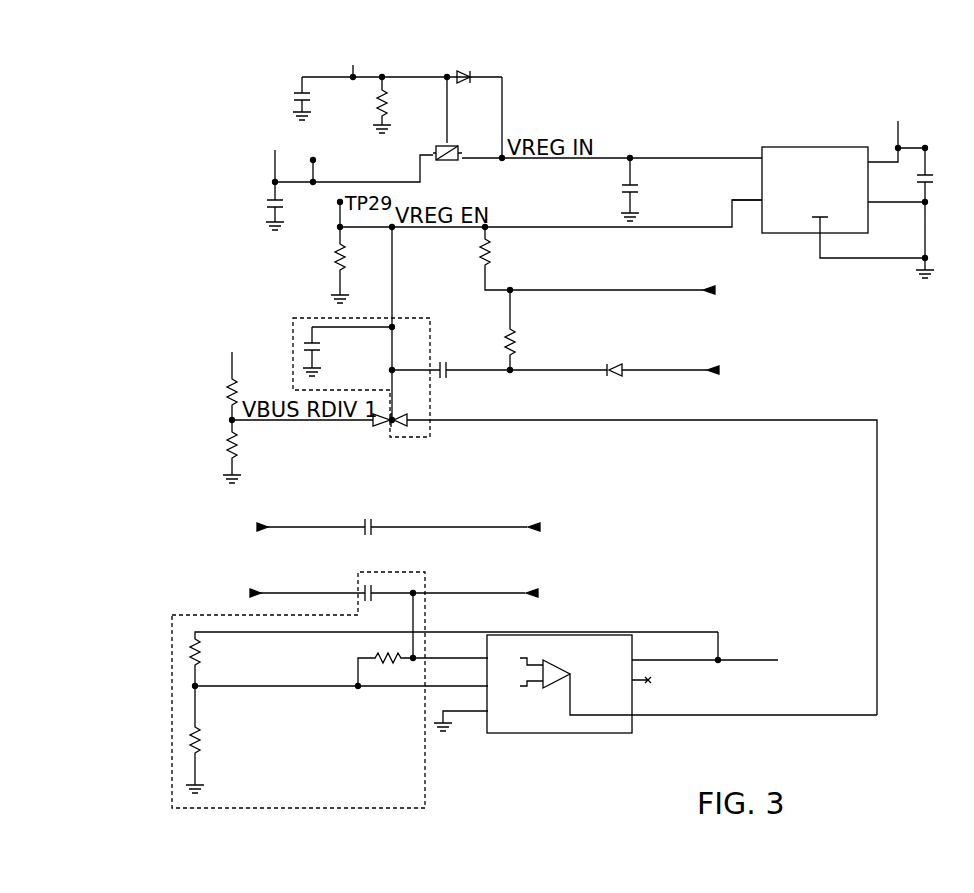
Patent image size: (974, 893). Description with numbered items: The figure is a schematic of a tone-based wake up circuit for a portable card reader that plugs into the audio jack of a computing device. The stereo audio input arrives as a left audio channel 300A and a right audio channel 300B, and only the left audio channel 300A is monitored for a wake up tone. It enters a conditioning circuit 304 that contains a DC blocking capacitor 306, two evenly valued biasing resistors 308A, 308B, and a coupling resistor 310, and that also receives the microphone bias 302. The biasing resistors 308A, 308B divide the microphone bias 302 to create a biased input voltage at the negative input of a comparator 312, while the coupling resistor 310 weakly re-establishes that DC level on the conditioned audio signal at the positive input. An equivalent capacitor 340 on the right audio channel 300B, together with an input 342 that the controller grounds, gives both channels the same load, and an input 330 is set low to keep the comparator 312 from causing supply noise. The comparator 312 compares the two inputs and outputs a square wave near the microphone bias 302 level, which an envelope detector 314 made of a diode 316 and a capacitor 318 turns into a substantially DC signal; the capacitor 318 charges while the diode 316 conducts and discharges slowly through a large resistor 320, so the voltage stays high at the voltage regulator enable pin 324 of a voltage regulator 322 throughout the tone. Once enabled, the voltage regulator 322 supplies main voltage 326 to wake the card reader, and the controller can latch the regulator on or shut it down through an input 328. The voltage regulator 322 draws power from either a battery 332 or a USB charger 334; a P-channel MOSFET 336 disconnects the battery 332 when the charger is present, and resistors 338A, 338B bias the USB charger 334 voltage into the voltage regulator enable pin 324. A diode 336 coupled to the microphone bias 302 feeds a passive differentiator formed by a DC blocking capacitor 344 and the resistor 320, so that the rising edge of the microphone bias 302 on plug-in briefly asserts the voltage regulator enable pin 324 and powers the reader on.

The left audio channel 300A is at (251, 592).
The right audio channel 300B is at (258, 528).
The microphone bias 302 is at (720, 370).
The conditioning circuit 304 is at (172, 632).
The DC blocking capacitor 306 is at (376, 590).
The biasing resistor 308A is at (190, 655).
The biasing resistor 308B is at (190, 750).
The coupling resistor 310 is at (388, 662).
The comparator 312 is at (572, 735).
The envelope detector 314 is at (295, 320).
The diode 316 is at (408, 430).
The capacitor 318 is at (328, 345).
The resistor 320 is at (338, 263).
The voltage regulator 322 is at (785, 145).
The voltage regulator enable pin 324 is at (752, 203).
The main voltage 326 is at (897, 100).
The input 328 is at (716, 290).
The input 330 is at (538, 593).
The battery 332 is at (250, 130).
The USB charger 334 is at (312, 50).
The P-channel MOSFET / diode 336 is at (447, 166).
The resistor 338A is at (227, 385).
The resistor 338B is at (227, 452).
The equivalent capacitor 340 is at (376, 522).
The input 342 is at (540, 527).
The DC blocking capacitor 344 is at (445, 360).